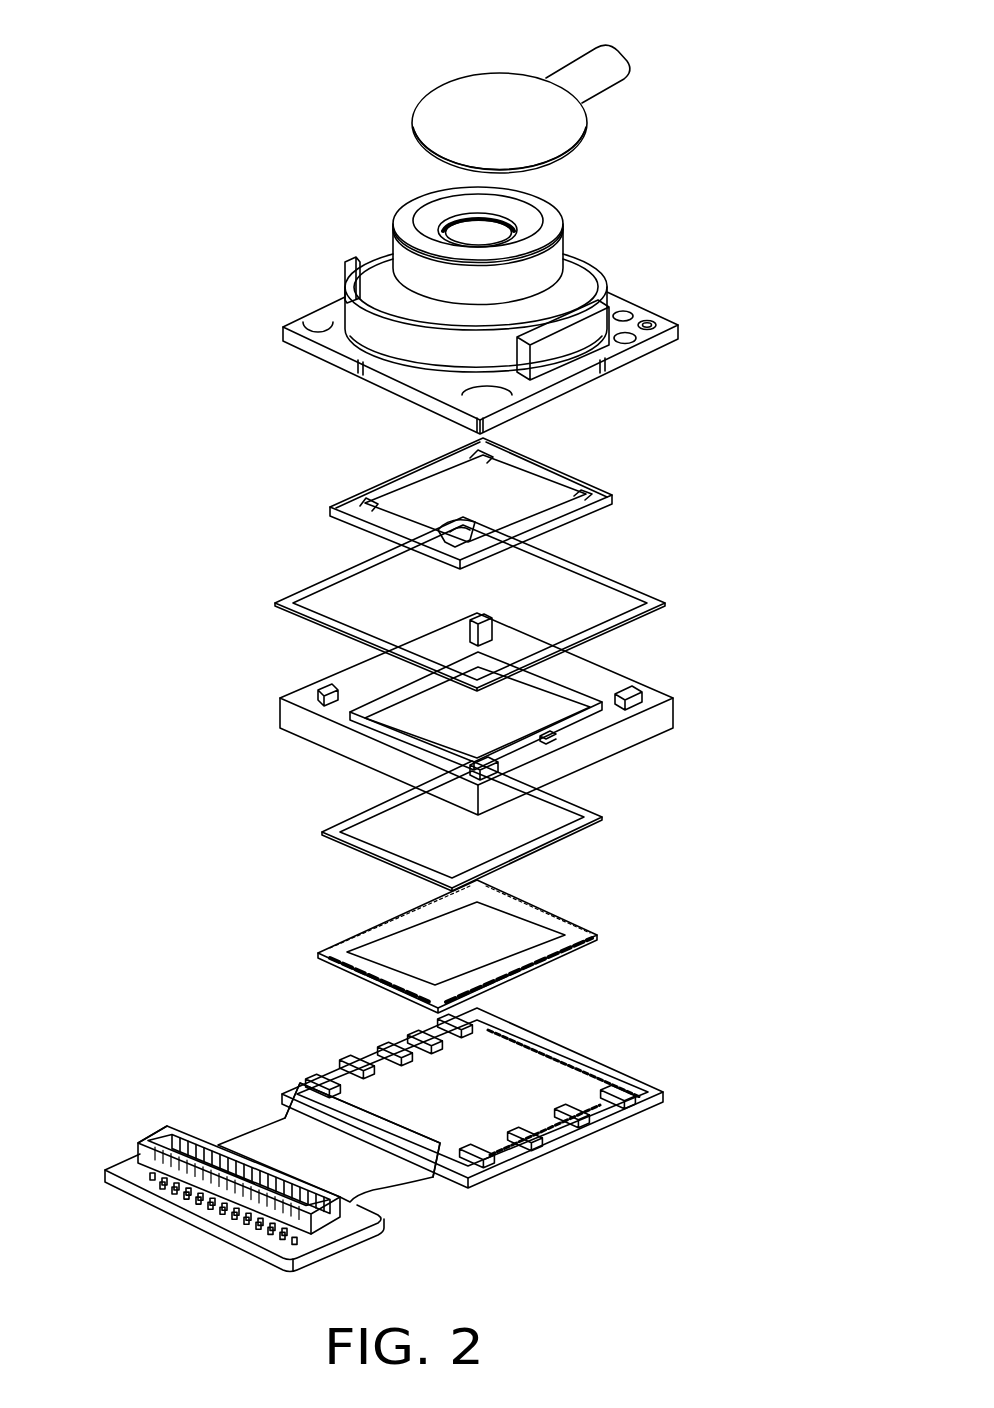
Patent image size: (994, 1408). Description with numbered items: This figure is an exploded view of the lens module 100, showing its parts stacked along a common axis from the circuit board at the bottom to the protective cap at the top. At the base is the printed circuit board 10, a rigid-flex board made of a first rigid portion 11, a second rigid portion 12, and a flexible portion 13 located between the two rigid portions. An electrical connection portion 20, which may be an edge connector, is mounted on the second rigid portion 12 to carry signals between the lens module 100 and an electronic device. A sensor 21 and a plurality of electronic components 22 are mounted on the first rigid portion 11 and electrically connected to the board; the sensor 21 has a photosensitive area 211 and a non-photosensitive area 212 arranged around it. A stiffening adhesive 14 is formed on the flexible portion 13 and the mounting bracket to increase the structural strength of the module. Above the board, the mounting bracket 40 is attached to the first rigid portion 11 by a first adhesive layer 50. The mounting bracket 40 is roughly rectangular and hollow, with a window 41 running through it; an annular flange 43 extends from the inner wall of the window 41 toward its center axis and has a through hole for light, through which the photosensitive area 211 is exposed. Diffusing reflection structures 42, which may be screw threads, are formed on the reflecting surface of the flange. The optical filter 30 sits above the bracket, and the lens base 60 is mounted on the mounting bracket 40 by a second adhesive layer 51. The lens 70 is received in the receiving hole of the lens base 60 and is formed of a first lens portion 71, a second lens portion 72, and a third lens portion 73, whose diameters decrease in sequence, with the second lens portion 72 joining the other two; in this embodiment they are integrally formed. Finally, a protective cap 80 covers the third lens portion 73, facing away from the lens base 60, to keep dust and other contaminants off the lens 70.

The lens module 100 is at (431, 36).
The protective cap 80 is at (530, 128).
The lens 70 is at (688, 195).
The third lens portion 73 is at (553, 222).
The second lens portion 72 is at (563, 290).
The first lens portion 71 is at (597, 296).
The lens base 60 is at (580, 363).
The optical filter 30 is at (588, 495).
The second adhesive layer 51 is at (322, 585).
The mounting bracket 40 is at (470, 714).
The window 41 is at (537, 703).
The diffusing reflection structures 42 is at (382, 678).
The annular flange 43 is at (398, 686).
The first adhesive layer 50 is at (567, 832).
The sensor 21 is at (492, 946).
The photosensitive area 211 is at (400, 943).
The non-photosensitive area 212 is at (560, 958).
The printed circuit board 10 is at (506, 1229).
The first rigid portion 11 is at (467, 1123).
The second rigid portion 12 is at (254, 1171).
The flexible portion 13 is at (337, 1150).
The stiffening adhesive 14 is at (312, 1107).
The electrical connection portion 20 is at (201, 1134).
The electronic components 22 is at (358, 1063).